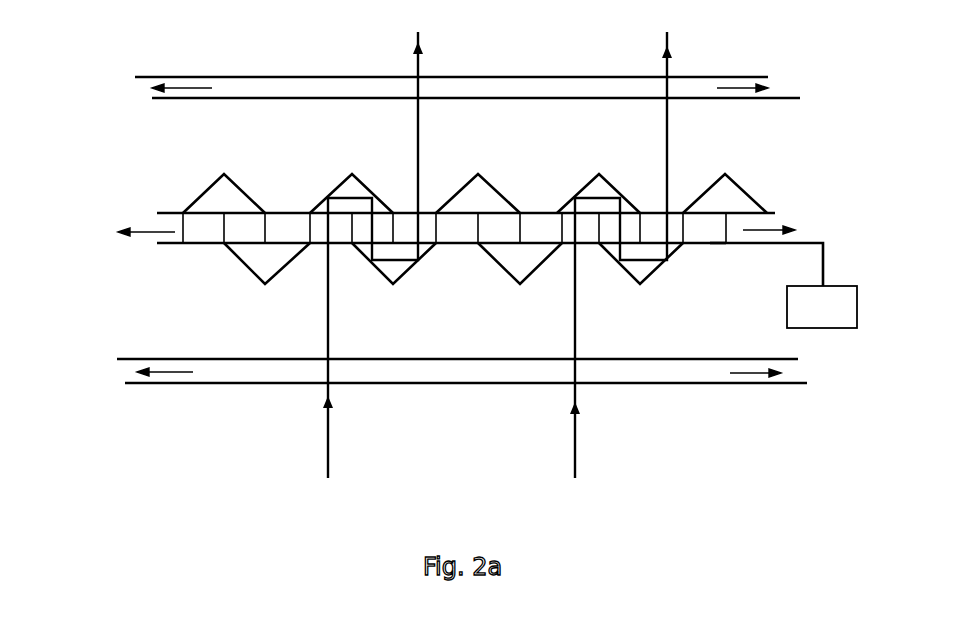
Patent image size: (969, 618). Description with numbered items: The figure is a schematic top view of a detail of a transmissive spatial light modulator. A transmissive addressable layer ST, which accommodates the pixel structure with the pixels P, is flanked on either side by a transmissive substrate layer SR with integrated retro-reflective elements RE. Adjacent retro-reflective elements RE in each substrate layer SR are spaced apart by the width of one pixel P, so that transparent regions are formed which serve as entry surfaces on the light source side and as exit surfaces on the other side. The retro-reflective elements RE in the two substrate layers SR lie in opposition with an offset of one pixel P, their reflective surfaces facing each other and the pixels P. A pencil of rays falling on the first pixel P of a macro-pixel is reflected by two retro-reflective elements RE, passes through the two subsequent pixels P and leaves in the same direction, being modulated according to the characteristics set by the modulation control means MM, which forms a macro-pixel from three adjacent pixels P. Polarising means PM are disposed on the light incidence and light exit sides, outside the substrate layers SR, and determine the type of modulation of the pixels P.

The polarising means PM is at (153, 93).
The substrate layer SR is at (157, 277).
The addressable layer ST is at (157, 242).
The retro-reflective element RE is at (243, 266).
The pixel P is at (717, 243).
The modulation control means MM is at (822, 307).